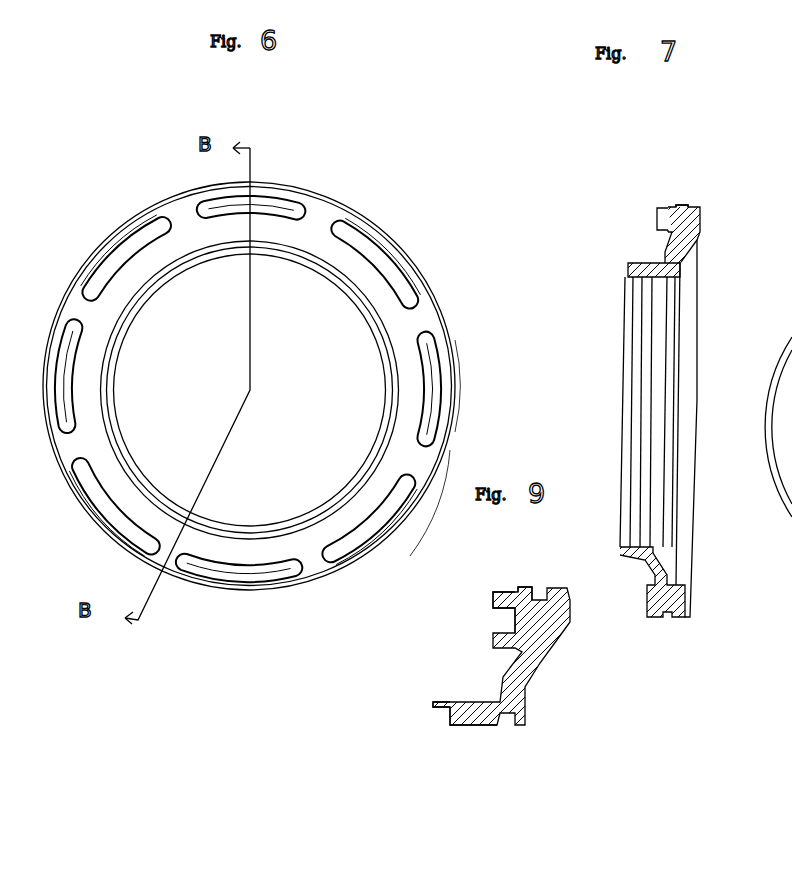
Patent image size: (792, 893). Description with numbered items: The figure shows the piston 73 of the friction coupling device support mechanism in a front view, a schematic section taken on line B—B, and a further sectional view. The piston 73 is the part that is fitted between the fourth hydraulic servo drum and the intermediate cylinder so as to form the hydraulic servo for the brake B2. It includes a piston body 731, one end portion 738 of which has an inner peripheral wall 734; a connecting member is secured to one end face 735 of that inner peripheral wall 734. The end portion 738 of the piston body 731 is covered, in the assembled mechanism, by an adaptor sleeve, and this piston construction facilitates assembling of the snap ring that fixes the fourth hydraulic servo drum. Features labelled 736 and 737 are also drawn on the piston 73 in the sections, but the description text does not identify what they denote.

In FIG. 6, the piston 73 is at (346, 206).
In FIG. 7, the piston 73 is at (698, 213).
In FIG. 9, the piston 73 is at (563, 631).
In FIG. 6, the piston body 731 is at (375, 282).
In FIG. 7, the piston body 731 is at (697, 232).
In FIG. 9, the piston body 731 is at (538, 669).
In FIG. 6, the inner peripheral wall 734 is at (381, 427).
In FIG. 7, the inner peripheral wall 734 is at (643, 283).
In FIG. 9, the inner peripheral wall 734 is at (470, 727).
In FIG. 6, the end face 735 is at (383, 392).
In FIG. 7, the end face 735 is at (632, 265).
In FIG. 9, the end face 735 is at (435, 708).
In FIG. 6, the projection 736 is at (455, 328).
In FIG. 7, the projection 736 is at (662, 210).
In FIG. 9, the projection 736 is at (506, 590).
In FIG. 6, the groove 737 is at (443, 368).
In FIG. 7, the groove 737 is at (657, 214).
In FIG. 9, the groove 737 is at (500, 624).
In FIG. 6, the end portion 738 is at (453, 431).
In FIG. 7, the end portion 738 is at (673, 208).
In FIG. 9, the end portion 738 is at (532, 590).